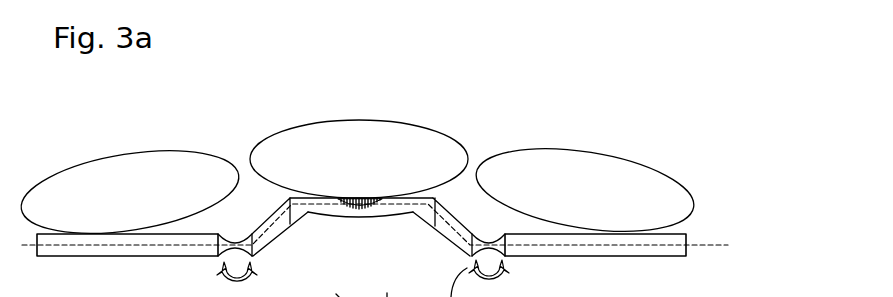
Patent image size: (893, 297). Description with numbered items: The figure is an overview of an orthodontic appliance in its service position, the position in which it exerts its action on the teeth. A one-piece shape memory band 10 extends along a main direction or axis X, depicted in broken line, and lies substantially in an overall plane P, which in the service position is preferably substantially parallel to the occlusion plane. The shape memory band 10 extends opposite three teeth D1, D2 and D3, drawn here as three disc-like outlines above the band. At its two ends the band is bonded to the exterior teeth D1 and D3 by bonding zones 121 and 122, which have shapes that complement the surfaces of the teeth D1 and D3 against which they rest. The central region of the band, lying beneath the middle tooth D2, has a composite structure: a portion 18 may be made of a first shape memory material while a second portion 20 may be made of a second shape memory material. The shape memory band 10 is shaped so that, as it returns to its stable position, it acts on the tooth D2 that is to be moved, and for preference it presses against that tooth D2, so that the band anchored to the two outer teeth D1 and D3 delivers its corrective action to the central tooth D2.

The shape memory band 10 is at (698, 230).
The bonding zone 121 is at (97, 233).
The bonding zone 122 is at (637, 233).
The portion 18 is at (371, 209).
The second portion 20 is at (327, 203).
The tooth D1 is at (138, 163).
The tooth D2 is at (370, 145).
The tooth D3 is at (590, 167).
The overall plane P is at (680, 89).
The axis X is at (388, 229).